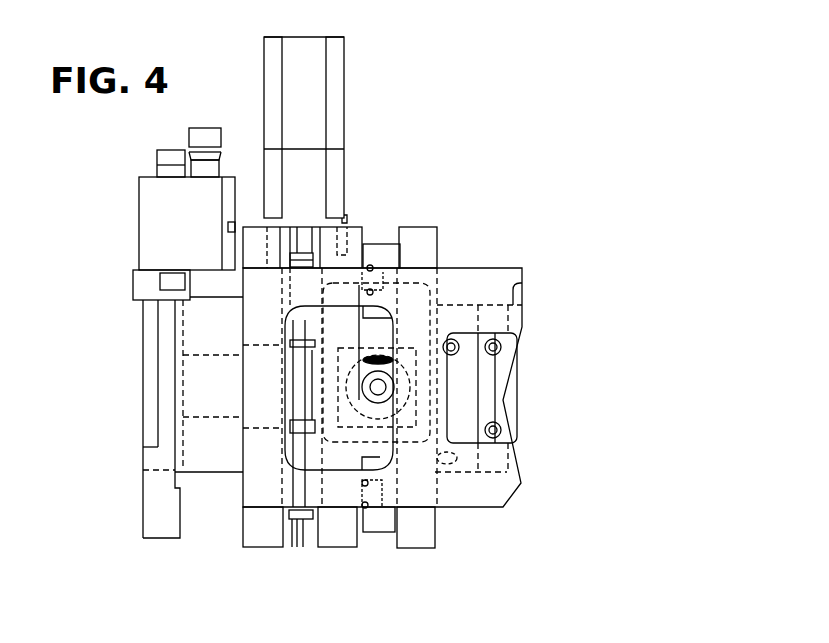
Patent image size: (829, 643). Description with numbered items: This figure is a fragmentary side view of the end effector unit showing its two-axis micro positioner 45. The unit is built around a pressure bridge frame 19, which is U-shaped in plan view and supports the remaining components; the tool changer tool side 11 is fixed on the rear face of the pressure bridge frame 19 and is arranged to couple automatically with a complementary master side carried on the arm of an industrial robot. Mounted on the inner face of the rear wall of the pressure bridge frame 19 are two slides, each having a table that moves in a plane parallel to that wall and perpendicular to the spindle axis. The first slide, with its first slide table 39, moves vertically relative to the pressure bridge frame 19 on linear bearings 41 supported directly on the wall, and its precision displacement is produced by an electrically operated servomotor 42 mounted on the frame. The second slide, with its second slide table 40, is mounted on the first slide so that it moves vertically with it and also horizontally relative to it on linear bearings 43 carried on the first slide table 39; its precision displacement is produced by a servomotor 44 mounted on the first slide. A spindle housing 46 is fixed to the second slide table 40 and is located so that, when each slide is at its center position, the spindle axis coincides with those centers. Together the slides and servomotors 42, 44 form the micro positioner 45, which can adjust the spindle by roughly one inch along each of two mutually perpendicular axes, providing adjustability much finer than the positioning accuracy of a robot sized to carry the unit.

The tool changer tool side 11 is at (146, 378).
The pressure bridge frame 19 is at (473, 268).
The first slide table 39 is at (343, 547).
The second slide table 40 is at (418, 227).
The linear bearings 41 is at (297, 547).
The servomotor 42 is at (265, 67).
The linear bearings 43 is at (382, 244).
The servomotor 44 is at (373, 348).
The two-axis micro positioner 45 is at (324, 567).
The spindle housing 46 is at (513, 305).